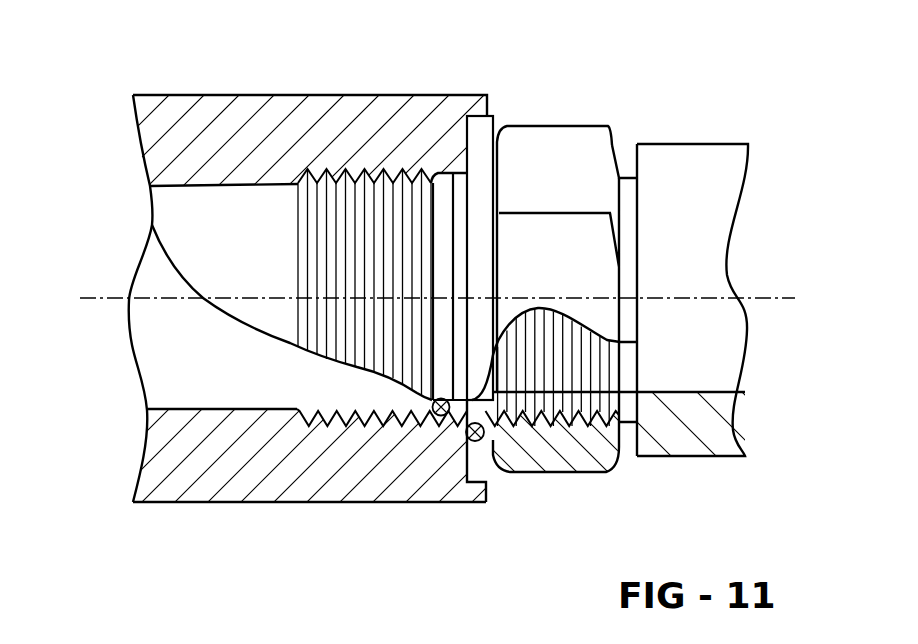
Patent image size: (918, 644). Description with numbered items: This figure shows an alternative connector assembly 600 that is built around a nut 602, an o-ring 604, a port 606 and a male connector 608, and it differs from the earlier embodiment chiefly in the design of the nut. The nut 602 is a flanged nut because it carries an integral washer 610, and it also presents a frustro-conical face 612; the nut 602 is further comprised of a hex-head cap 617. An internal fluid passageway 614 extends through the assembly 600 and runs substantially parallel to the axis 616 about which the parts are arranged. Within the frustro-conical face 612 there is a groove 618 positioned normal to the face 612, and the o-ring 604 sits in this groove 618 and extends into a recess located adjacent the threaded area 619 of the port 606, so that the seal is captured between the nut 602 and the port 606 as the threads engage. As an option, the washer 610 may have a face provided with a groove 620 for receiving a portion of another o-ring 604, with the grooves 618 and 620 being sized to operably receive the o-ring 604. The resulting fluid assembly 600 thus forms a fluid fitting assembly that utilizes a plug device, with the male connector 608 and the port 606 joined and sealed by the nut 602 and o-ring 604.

The connector assembly 600 is at (430, 76).
The nut 602 is at (571, 150).
The o-ring 604 is at (436, 421).
The port 606 is at (213, 477).
The male connector 608 is at (700, 413).
The integral washer 610 is at (482, 150).
The frustro-conical face 612 is at (445, 188).
The internal fluid passageway 614 is at (227, 407).
The axis 616 is at (105, 300).
The hex-head cap 617 is at (620, 140).
The groove 618 is at (353, 117).
The threaded area 619 is at (317, 190).
The groove 620 is at (480, 468).